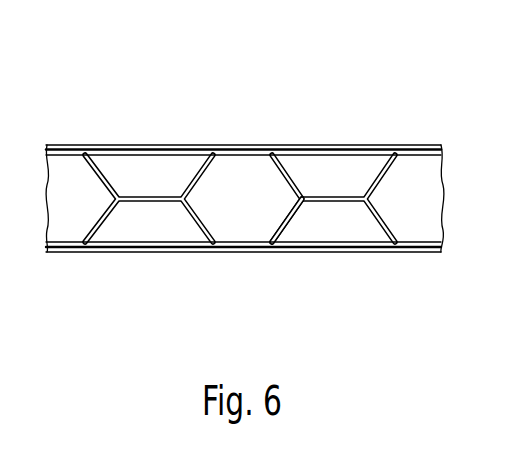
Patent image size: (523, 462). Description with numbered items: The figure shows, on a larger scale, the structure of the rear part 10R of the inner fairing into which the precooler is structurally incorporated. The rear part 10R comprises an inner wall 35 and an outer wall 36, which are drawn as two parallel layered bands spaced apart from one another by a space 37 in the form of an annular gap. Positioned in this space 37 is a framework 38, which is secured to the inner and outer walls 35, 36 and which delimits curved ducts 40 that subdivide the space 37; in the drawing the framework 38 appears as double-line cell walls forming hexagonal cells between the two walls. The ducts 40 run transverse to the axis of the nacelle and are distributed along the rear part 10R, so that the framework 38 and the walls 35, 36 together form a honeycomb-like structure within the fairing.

The rear part of the inner fairing 10R is at (304, 120).
The inner wall 35 is at (125, 252).
The outer wall 36 is at (163, 145).
The space 37 is at (358, 170).
The framework 38 is at (293, 222).
The curved ducts 40 is at (128, 165).